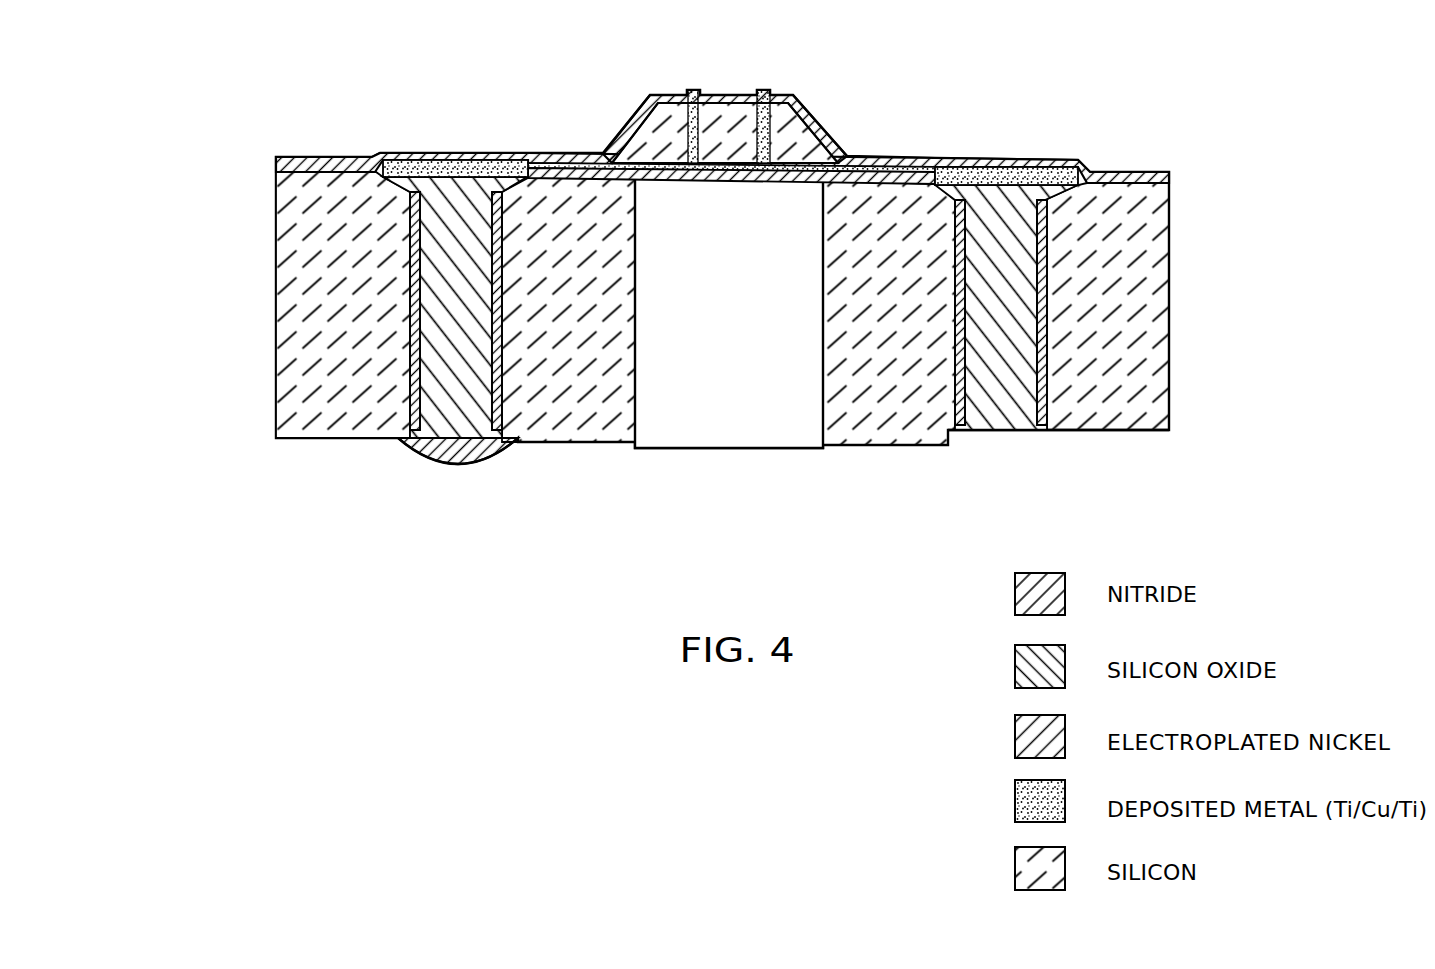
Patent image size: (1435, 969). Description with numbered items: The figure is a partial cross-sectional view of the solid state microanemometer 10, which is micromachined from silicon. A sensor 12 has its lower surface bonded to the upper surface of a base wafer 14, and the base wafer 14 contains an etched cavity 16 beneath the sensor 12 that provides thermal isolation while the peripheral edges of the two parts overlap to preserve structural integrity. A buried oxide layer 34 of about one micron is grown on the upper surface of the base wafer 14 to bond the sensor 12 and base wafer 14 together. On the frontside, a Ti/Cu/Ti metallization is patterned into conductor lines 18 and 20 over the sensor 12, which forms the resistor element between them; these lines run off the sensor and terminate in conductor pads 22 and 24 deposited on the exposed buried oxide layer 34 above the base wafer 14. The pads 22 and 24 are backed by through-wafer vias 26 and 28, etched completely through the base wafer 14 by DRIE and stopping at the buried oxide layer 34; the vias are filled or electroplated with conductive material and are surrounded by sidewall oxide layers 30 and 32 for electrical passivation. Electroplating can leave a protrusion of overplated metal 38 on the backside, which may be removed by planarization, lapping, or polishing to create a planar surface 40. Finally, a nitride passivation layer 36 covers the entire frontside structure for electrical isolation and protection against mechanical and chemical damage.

The microanemometer 10 is at (284, 118).
The sensor 12 is at (752, 99).
The base wafer 14 is at (302, 238).
The cavity 16 is at (723, 447).
The conductor line 18 is at (550, 166).
The conductor line 20 is at (935, 166).
The conductor pad 22 is at (445, 162).
The conductor pad 24 is at (1025, 161).
The through-wafer via 26 is at (445, 325).
The through-wafer via 28 is at (1008, 352).
The sidewall oxide layer 30 is at (403, 420).
The sidewall oxide layer 32 is at (1043, 387).
The buried oxide layer 34 is at (727, 172).
The nitride passivation layer 36 is at (632, 124).
The overplated metal 38 is at (457, 455).
The planar surface 40 is at (997, 432).